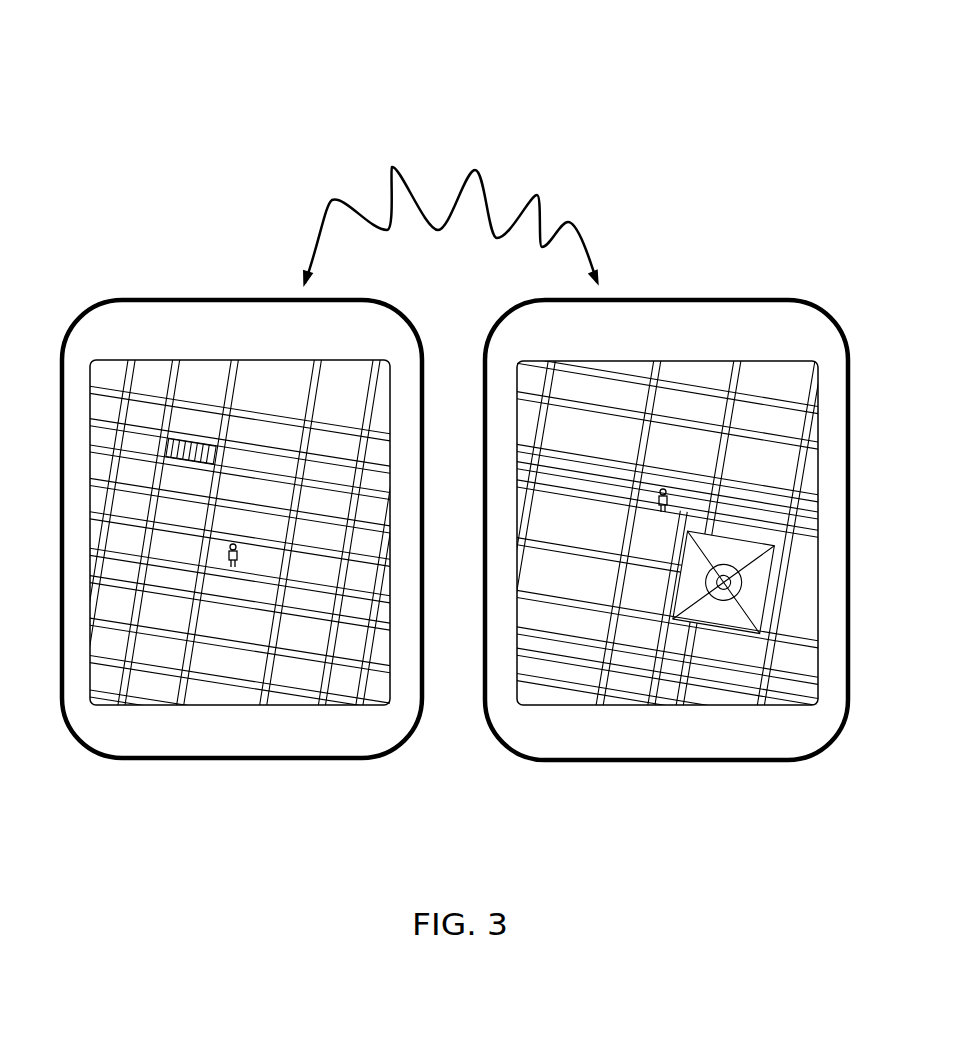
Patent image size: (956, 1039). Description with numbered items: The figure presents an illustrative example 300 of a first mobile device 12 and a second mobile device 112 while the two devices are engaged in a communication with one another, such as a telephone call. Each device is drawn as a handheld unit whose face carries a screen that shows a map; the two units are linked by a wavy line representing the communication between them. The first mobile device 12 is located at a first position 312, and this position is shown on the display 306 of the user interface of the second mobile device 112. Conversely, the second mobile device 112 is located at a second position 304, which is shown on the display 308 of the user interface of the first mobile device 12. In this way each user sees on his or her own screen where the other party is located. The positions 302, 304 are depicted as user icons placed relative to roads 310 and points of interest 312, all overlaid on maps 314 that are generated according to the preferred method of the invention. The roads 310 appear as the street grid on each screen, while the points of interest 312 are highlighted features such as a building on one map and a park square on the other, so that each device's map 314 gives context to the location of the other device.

The illustrative example 300 is at (516, 110).
The first mobile device 12 is at (257, 348).
The second mobile device 112 is at (658, 348).
The roads 310 is at (125, 423).
The first position / points of interest 312 is at (180, 450).
The maps 314 is at (465, 567).
The display 308 is at (352, 690).
The display 306 is at (542, 640).
The second position 304 is at (228, 553).
The position 302 is at (662, 494).